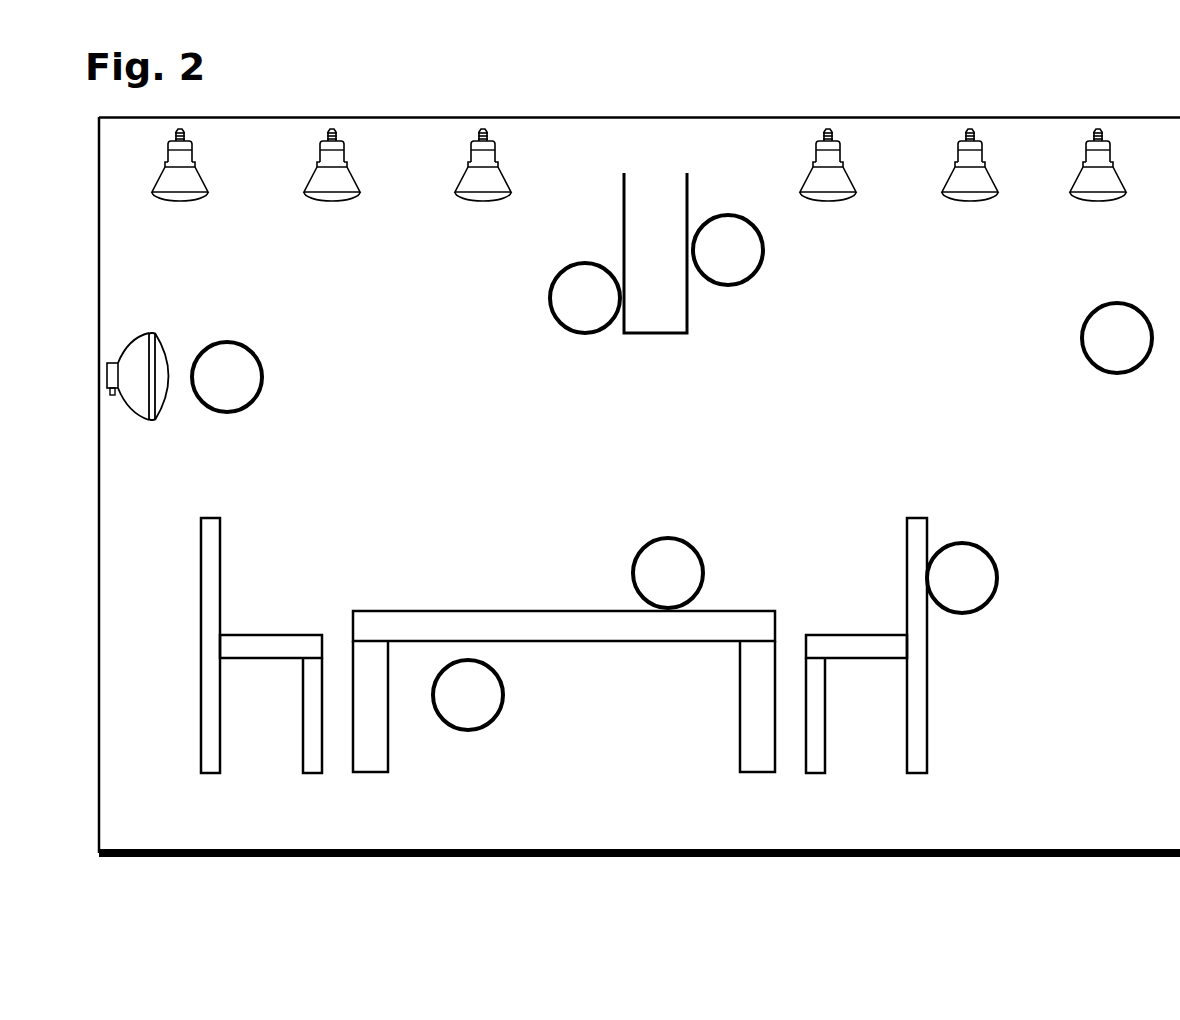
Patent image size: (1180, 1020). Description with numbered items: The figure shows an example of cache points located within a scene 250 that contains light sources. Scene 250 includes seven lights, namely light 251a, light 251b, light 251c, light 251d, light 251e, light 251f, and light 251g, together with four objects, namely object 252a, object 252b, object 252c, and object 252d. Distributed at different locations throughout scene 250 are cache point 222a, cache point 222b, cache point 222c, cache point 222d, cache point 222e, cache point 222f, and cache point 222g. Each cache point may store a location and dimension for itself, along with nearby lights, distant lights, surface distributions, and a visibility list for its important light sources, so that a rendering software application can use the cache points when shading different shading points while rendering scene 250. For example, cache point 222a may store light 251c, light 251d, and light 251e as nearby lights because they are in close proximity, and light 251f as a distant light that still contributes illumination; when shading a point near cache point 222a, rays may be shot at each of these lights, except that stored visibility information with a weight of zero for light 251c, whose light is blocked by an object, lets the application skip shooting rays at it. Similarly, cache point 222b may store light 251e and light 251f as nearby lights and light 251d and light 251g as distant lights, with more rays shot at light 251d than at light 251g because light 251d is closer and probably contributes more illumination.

The scene 250 is at (639, 485).
The light 251a is at (215, 212).
The light 251b is at (367, 212).
The light 251c is at (518, 212).
The light 251d is at (862, 213).
The light 251e is at (1004, 213).
The light 251f is at (1134, 213).
The light 251g is at (179, 426).
The object 252a is at (686, 345).
The object 252b is at (575, 654).
The object 252c is at (941, 698).
The object 252d is at (187, 686).
The cache point 222a is at (728, 250).
The cache point 222b is at (1117, 338).
The cache point 222c is at (962, 578).
The cache point 222d is at (668, 573).
The cache point 222e is at (468, 695).
The cache point 222f is at (227, 377).
The cache point 222g is at (585, 298).